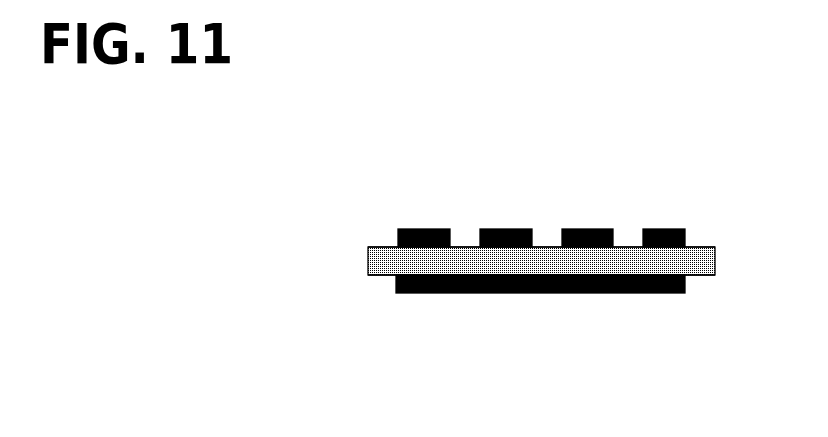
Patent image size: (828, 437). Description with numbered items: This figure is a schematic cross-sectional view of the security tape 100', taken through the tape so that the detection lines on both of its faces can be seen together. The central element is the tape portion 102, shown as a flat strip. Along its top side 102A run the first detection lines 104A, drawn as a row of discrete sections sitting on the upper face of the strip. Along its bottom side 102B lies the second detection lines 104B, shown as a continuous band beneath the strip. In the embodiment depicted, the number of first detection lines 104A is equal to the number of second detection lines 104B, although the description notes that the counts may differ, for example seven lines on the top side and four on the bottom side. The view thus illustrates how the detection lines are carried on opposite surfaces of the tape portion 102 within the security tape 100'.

The security tape 100' is at (479, 223).
The tape portion 102 is at (377, 260).
The top side 102A is at (382, 243).
The bottom side 102B is at (377, 273).
The first detection lines 104A is at (412, 232).
The second detection lines 104B is at (398, 292).